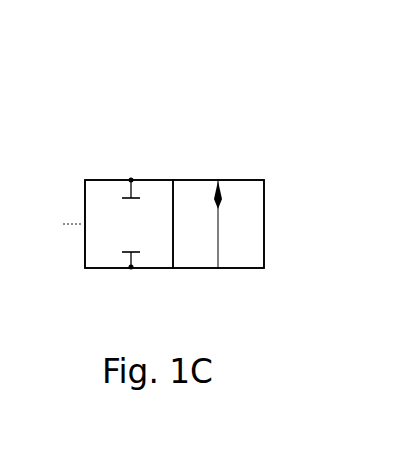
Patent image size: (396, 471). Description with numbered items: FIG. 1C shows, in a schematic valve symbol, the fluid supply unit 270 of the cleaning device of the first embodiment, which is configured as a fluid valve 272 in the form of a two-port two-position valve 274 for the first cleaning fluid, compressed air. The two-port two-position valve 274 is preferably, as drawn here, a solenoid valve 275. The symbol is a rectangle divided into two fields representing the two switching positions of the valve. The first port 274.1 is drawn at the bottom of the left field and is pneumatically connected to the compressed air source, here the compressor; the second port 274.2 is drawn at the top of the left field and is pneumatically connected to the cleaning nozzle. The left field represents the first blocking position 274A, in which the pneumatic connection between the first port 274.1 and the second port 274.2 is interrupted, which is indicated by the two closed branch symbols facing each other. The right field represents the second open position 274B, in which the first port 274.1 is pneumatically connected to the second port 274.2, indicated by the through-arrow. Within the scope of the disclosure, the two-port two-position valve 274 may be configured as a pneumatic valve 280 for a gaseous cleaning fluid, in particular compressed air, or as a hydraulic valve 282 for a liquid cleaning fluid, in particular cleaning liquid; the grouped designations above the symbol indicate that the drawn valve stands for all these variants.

The fluid supply unit 270 is at (290, 52).
The fluid valve 272 is at (336, 52).
The 2/2-way valve 274 is at (380, 52).
The 2/2-way solenoid valve 275 is at (292, 75).
The pneumatic 2/2-way valve 280 is at (338, 75).
The hydraulic 2/2-way valve 282 is at (378, 75).
The first blocking position 274A is at (158, 190).
The second open position 274B is at (233, 189).
The first port 274.1 is at (131, 268).
The second port 274.2 is at (131, 180).